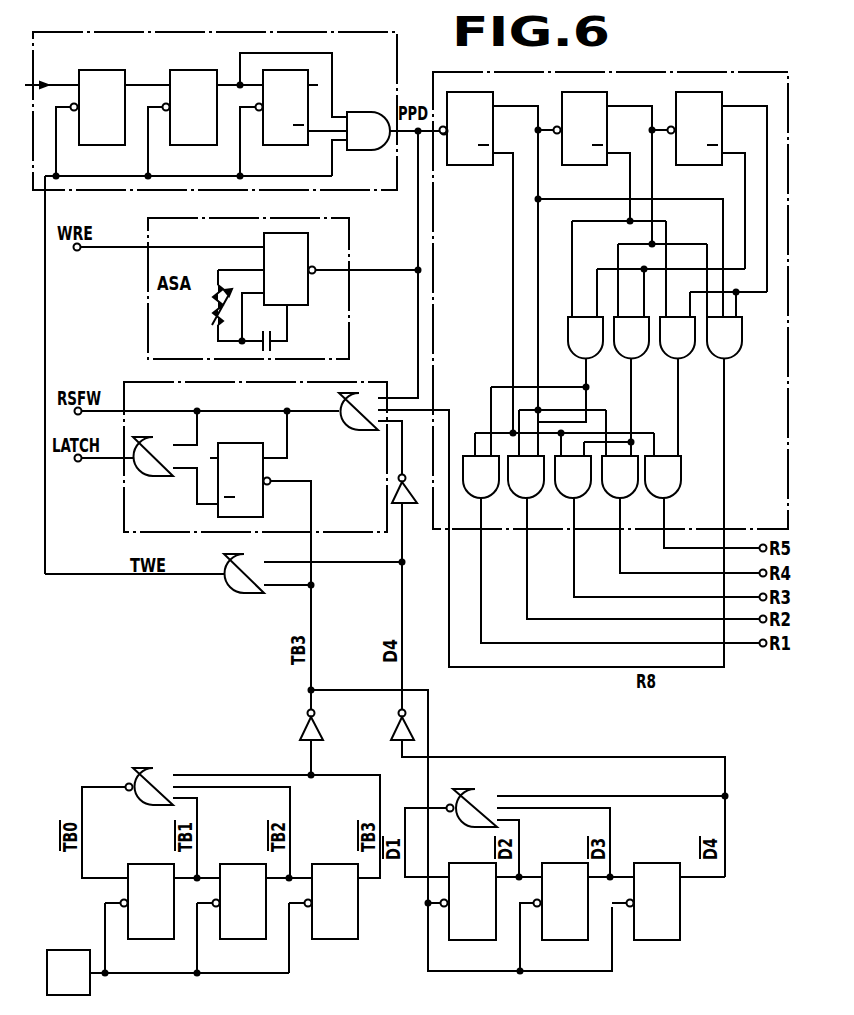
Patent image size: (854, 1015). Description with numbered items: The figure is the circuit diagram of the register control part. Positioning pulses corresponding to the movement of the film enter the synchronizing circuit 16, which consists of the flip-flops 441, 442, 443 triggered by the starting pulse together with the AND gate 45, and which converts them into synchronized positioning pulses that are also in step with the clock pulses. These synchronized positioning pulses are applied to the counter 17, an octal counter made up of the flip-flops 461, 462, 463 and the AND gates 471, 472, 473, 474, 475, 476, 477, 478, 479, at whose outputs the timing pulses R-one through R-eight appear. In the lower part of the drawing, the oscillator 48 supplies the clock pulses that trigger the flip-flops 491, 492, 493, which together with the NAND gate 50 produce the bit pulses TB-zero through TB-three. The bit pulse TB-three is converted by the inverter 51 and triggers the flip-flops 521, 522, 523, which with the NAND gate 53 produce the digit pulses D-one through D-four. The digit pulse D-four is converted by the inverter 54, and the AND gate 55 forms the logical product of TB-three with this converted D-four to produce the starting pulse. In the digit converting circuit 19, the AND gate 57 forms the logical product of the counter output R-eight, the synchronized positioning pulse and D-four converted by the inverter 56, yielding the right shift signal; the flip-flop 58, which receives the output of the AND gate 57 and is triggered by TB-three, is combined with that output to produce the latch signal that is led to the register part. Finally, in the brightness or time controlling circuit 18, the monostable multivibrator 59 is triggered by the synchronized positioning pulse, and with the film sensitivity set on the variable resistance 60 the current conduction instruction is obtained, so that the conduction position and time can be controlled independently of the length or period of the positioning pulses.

The synchronizing circuit 16 is at (135, 45).
The counter 17 is at (730, 82).
The brightness or time controlling circuit 18 is at (343, 252).
The digit converting circuit 19 is at (130, 490).
The flip-flop 441 is at (101, 136).
The flip-flop 442 is at (193, 136).
The flip-flop 443 is at (286, 136).
The AND gate 45 is at (368, 131).
The flip-flop 461 is at (470, 156).
The flip-flop 462 is at (585, 156).
The flip-flop 463 is at (699, 156).
The AND gate 471 is at (724, 338).
The AND gate 472 is at (677, 338).
The AND gate 473 is at (631, 338).
The AND gate 474 is at (585, 338).
The AND gate 475 is at (663, 477).
The AND gate 476 is at (620, 477).
The AND gate 477 is at (573, 477).
The AND gate 478 is at (526, 477).
The AND gate 479 is at (481, 477).
The oscillator 48 is at (66, 950).
The flip-flop 491 is at (150, 932).
The flip-flop 492 is at (243, 932).
The flip-flop 493 is at (336, 932).
The NAND gate 50 is at (150, 786).
The inverter 51 is at (299, 729).
The flip-flop 521 is at (473, 933).
The flip-flop 522 is at (566, 933).
The flip-flop 523 is at (658, 933).
The NAND gate 53 is at (472, 808).
The inverter 54 is at (391, 729).
The AND gate 55 is at (244, 573).
The inverter 56 is at (406, 504).
The AND gate 57 is at (358, 411).
The flip-flop 58 is at (244, 466).
The monostable multivibrator 59 is at (304, 296).
The variable resistance 60 is at (208, 300).